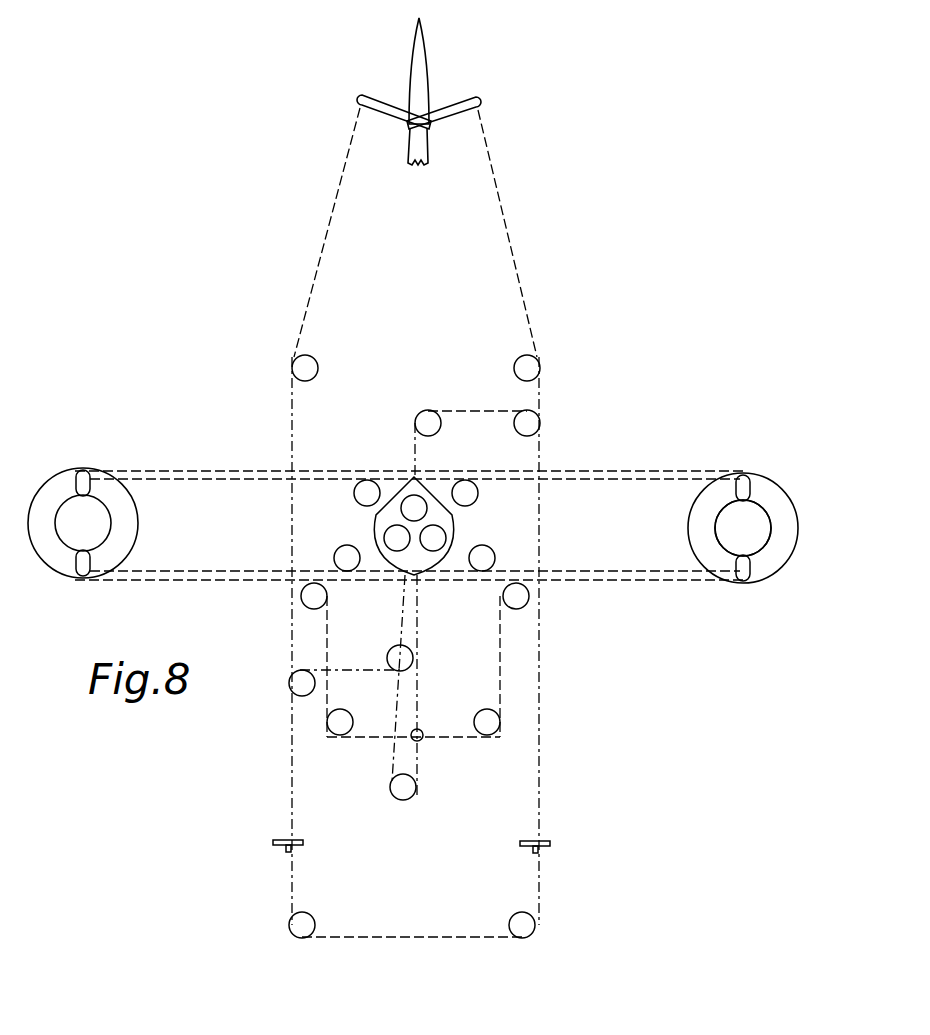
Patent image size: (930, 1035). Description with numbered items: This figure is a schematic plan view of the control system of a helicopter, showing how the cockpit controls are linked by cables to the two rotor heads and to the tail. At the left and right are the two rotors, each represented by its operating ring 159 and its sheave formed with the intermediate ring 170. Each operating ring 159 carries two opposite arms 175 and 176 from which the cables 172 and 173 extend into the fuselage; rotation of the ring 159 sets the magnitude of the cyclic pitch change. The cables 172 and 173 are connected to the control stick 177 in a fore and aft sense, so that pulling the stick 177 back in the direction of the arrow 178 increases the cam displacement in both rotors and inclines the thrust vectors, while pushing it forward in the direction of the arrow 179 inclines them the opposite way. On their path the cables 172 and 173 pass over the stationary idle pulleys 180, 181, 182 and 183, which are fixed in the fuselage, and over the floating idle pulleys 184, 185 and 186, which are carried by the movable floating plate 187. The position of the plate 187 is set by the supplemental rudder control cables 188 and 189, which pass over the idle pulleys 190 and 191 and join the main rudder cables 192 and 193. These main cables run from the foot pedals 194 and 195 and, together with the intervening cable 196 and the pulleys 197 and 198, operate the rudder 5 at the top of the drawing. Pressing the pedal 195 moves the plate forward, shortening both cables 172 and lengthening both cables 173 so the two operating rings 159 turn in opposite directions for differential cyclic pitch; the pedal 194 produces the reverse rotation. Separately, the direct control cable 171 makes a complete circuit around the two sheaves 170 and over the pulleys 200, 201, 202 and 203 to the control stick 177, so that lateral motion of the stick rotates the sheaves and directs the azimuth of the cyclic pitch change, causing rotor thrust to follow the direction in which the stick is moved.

The rudder 5 is at (418, 70).
The operating ring 159 is at (765, 505).
The intermediate ring 170 is at (55, 556).
The control cable 171 is at (583, 471).
The tension member cable 172 is at (205, 470).
The cable 173 is at (205, 569).
The arm 175 is at (750, 492).
The arm 176 is at (753, 582).
The control stick 177 is at (411, 740).
The arrow 178 is at (441, 715).
The arrow 179 is at (437, 750).
The stationary idle pulley 180 is at (362, 495).
The stationary idle pulley 181 is at (472, 496).
The stationary idle pulley 182 is at (348, 558).
The stationary idle pulley 183 is at (484, 561).
The floating idle pulley 184 is at (408, 497).
The floating idle pulley 185 is at (397, 548).
The floating idle pulley 186 is at (435, 551).
The floating plate 187 is at (425, 560).
The supplemental rudder control cable 188 is at (416, 460).
The supplemental rudder control cable 189 is at (412, 605).
The idle pulley 190 is at (525, 412).
The idle pulley 191 is at (378, 657).
The main rudder cable 192 is at (541, 716).
The main rudder cable 193 is at (286, 733).
The foot pedal 194 is at (526, 840).
The foot pedal 195 is at (300, 838).
The intervening cable 196 is at (400, 939).
The pulley 197 is at (298, 936).
The pulley 198 is at (525, 365).
The pulley 200 is at (315, 608).
The pulley 201 is at (523, 606).
The pulley 202 is at (353, 704).
The pulley 203 is at (487, 712).